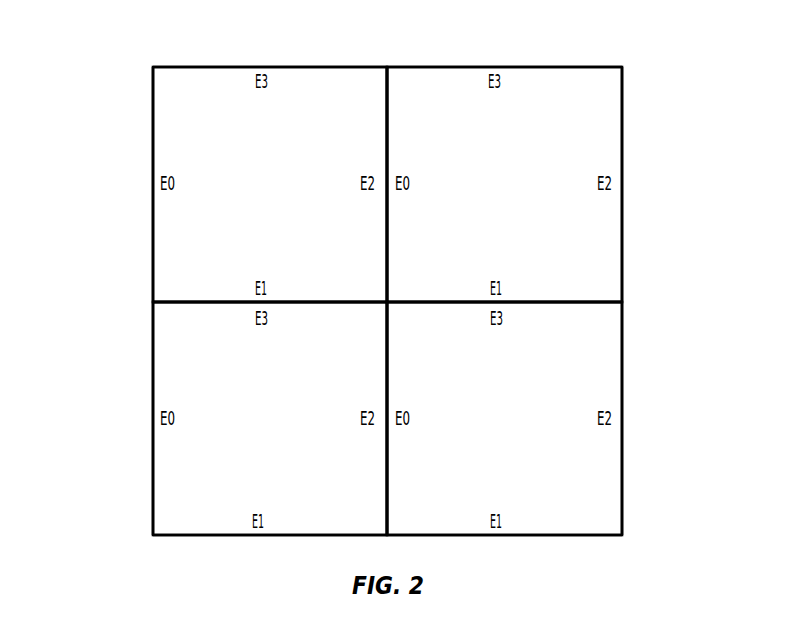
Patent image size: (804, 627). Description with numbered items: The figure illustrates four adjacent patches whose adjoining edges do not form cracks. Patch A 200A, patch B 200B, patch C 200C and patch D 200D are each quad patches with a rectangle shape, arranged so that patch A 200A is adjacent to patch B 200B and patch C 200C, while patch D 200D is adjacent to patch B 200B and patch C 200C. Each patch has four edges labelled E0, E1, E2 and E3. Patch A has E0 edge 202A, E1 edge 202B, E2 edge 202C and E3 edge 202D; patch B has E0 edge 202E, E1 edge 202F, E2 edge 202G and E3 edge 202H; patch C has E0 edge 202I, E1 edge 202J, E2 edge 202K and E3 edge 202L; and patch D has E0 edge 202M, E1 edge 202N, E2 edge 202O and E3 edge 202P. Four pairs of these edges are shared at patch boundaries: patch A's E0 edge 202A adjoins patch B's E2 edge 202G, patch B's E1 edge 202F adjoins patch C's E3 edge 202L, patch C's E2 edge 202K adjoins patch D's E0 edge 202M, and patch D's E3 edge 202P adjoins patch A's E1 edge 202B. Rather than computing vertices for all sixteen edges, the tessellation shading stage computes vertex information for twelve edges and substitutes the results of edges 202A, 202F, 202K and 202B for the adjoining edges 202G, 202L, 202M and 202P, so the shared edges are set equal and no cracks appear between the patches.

The patch A 200A is at (553, 194).
The patch B 200B is at (310, 194).
The patch C 200C is at (327, 428).
The patch D 200D is at (557, 432).
The E0 edge of patch A 202A is at (396, 255).
The E1 edge of patch A 202B is at (573, 293).
The E2 edge of patch A 202C is at (622, 168).
The E3 edge of patch A 202D is at (485, 67).
The E0 edge of patch B 202E is at (153, 195).
The E1 edge of patch B 202F is at (322, 293).
The E2 edge of patch B 202G is at (378, 130).
The E3 edge of patch B 202H is at (227, 67).
The E0 edge of patch C 202I is at (153, 445).
The E1 edge of patch C 202J is at (177, 535).
The E2 edge of patch C 202K is at (378, 381).
The E3 edge of patch C 202L is at (326, 311).
The E0 edge of patch D 202M is at (396, 345).
The E1 edge of patch D 202N is at (542, 535).
The E2 edge of patch D 202O is at (622, 422).
The E3 edge of patch D 202P is at (573, 311).